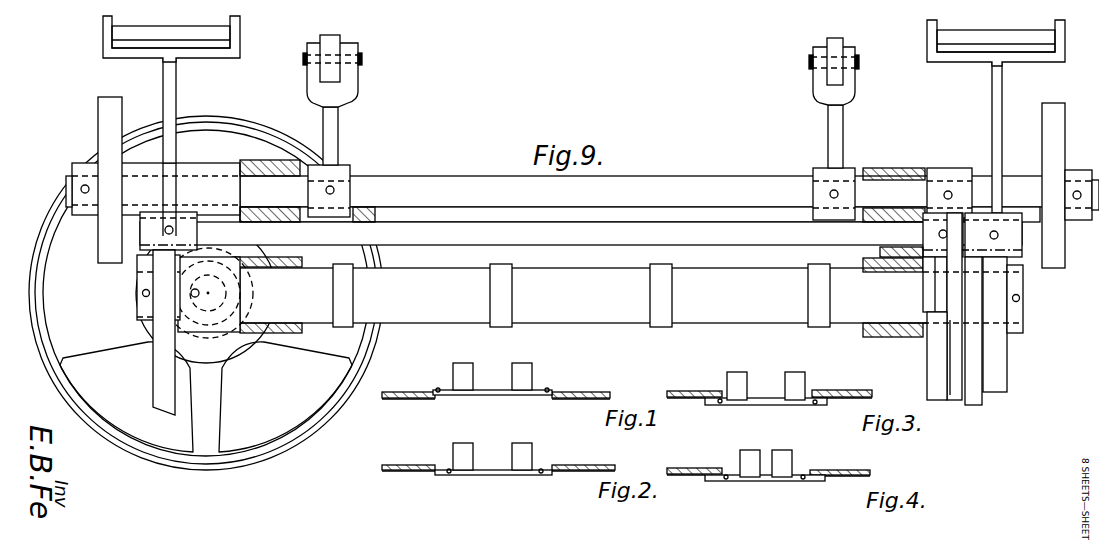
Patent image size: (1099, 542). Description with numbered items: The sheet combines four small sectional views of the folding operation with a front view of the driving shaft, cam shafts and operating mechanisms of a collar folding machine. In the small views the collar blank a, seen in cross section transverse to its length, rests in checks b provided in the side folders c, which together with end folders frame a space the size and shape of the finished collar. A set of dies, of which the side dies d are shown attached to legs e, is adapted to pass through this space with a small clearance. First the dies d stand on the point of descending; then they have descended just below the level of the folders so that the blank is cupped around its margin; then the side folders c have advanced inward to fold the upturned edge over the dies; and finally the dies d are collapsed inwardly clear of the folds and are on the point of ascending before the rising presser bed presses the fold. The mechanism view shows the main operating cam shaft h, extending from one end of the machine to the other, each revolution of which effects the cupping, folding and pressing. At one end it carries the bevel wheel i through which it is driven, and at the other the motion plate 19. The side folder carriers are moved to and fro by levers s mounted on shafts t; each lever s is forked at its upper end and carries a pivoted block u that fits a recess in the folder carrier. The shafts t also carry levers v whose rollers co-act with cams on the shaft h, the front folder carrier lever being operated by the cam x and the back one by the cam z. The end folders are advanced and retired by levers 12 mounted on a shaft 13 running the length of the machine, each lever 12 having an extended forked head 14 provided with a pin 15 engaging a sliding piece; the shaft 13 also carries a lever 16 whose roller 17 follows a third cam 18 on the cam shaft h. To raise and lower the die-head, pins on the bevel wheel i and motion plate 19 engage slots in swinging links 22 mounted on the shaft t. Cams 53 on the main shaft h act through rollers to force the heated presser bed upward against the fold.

In FIG. 9, the lever 12 is at (178, 102).
In FIG. 9, the shaft 13 is at (568, 237).
In FIG. 9, the forked head 14 is at (200, 52).
In FIG. 9, the pin 15 is at (140, 28).
In FIG. 9, the lever 16 is at (953, 343).
In FIG. 9, the roller 17 is at (973, 383).
In FIG. 9, the third cam 18 is at (973, 403).
In FIG. 9, the motion plate 19 is at (993, 355).
In FIG. 9, the swinging link 22 is at (98, 117).
In FIG. 9, the cams 53 is at (343, 327).
In FIG. 1, the collar blank a is at (492, 396).
In FIG. 2, the collar blank a is at (492, 476).
In FIG. 3, the collar blank a is at (767, 406).
In FIG. 4, the collar blank a is at (766, 482).
In FIG. 1, the checks b is at (420, 392).
In FIG. 2, the checks b is at (420, 465).
In FIG. 3, the checks b is at (710, 394).
In FIG. 4, the checks b is at (712, 470).
In FIG. 1, the side folders c is at (395, 398).
In FIG. 2, the side folders c is at (393, 471).
In FIG. 3, the side folders c is at (685, 399).
In FIG. 4, the side folders c is at (690, 476).
In FIG. 1, the side dies d is at (440, 394).
In FIG. 2, the side dies d is at (447, 477).
In FIG. 3, the side dies d is at (722, 406).
In FIG. 4, the side dies d is at (729, 482).
In FIG. 1, the legs e is at (514, 368).
In FIG. 2, the legs e is at (514, 453).
In FIG. 3, the legs e is at (786, 388).
In FIG. 4, the legs e is at (778, 452).
In FIG. 9, the main operating cam shaft h is at (588, 313).
In FIG. 9, the bevel wheel i is at (158, 368).
In FIG. 9, the levers s is at (338, 122).
In FIG. 9, the shafts t is at (423, 185).
In FIG. 9, the pivoted block u is at (333, 43).
In FIG. 9, the levers v is at (933, 272).
In FIG. 9, the cam x is at (955, 400).
In FIG. 9, the cam z is at (933, 398).